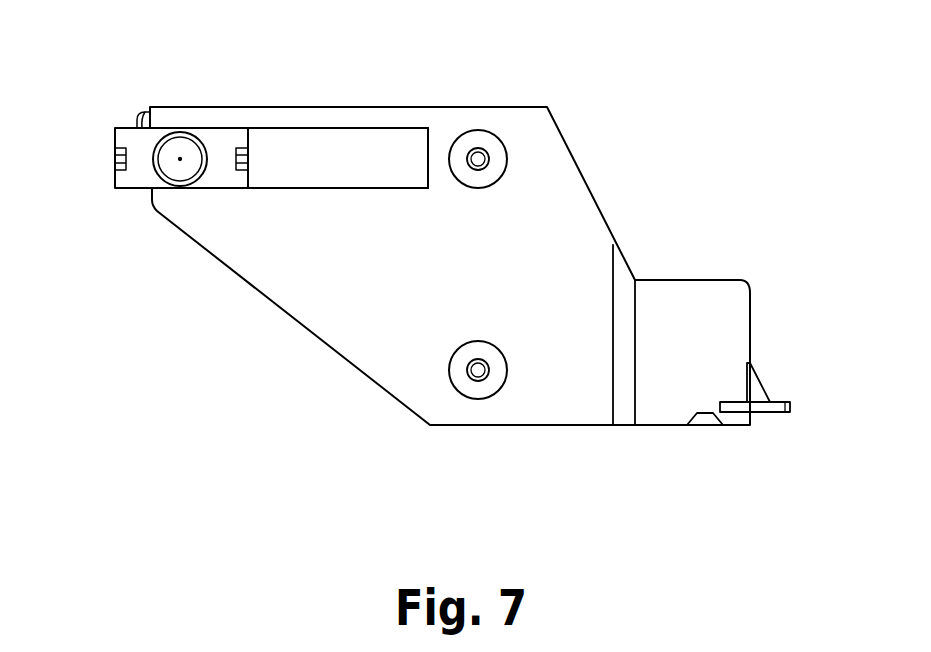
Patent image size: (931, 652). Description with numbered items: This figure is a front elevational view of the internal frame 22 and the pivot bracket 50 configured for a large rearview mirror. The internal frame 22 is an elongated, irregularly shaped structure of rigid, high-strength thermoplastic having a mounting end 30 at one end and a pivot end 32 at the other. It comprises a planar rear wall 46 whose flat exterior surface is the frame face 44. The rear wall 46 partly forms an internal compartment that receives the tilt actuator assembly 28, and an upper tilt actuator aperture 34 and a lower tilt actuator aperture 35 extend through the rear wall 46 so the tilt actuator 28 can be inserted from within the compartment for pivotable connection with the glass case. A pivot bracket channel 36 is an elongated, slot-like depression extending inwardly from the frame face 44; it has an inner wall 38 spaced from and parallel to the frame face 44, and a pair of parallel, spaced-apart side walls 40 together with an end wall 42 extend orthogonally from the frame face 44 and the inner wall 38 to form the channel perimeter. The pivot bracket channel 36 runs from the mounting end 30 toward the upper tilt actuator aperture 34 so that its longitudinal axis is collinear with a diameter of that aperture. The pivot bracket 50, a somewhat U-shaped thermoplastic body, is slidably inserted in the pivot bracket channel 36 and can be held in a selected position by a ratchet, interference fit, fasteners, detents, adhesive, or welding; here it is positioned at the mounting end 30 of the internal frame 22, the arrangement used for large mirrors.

The internal frame 22 is at (711, 268).
The tilt actuator assembly 28 is at (478, 150).
The mounting end 30 is at (166, 259).
The pivot end 32 is at (768, 422).
The upper tilt actuator aperture 34 is at (500, 129).
The lower tilt actuator aperture 35 is at (463, 390).
The pivot bracket channel 36 is at (279, 118).
The inner wall 38 is at (382, 147).
The side walls 40 is at (325, 133).
The end wall 42 is at (428, 150).
The frame face 44 is at (349, 274).
The rear wall 46 is at (542, 212).
The pivot bracket 50 is at (115, 199).